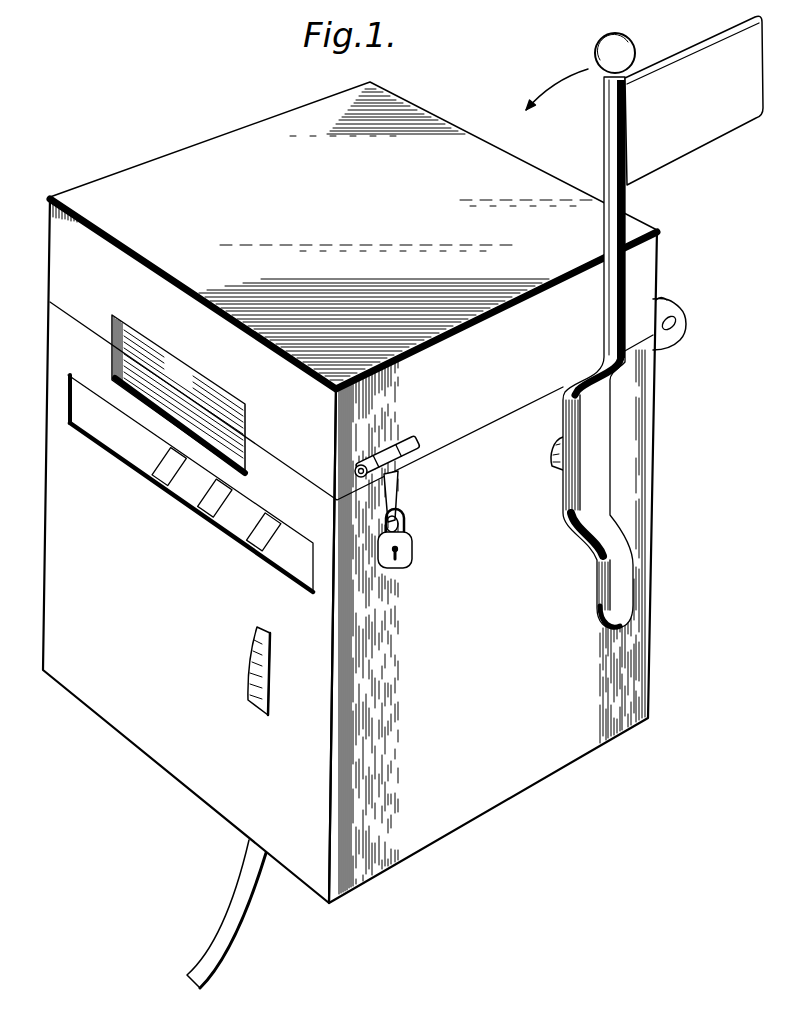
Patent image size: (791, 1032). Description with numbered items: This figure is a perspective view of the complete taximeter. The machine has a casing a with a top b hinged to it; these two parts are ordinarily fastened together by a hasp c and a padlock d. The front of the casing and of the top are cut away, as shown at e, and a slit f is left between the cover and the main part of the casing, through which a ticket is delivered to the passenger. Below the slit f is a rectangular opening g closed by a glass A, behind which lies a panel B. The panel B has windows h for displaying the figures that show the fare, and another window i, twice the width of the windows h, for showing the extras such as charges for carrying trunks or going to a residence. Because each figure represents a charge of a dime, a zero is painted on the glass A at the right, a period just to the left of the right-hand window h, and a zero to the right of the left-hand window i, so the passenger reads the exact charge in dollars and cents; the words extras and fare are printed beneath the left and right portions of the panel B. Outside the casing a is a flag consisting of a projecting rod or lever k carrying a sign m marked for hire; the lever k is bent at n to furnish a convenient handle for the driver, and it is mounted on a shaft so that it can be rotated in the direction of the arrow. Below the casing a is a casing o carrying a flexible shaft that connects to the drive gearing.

The casing a is at (364, 492).
The top b is at (397, 234).
The hasp c is at (400, 493).
The padlock d is at (412, 543).
The cut-away portion e is at (237, 442).
The slit f is at (163, 367).
The rectangular opening g is at (285, 528).
The windows h is at (168, 481).
The window for extras i is at (73, 376).
The rod or lever k is at (625, 292).
The sign m is at (683, 150).
The bent portion n is at (630, 537).
The casing carrying a flexible shaft o is at (232, 922).
The glass A is at (287, 556).
The panel B is at (275, 565).